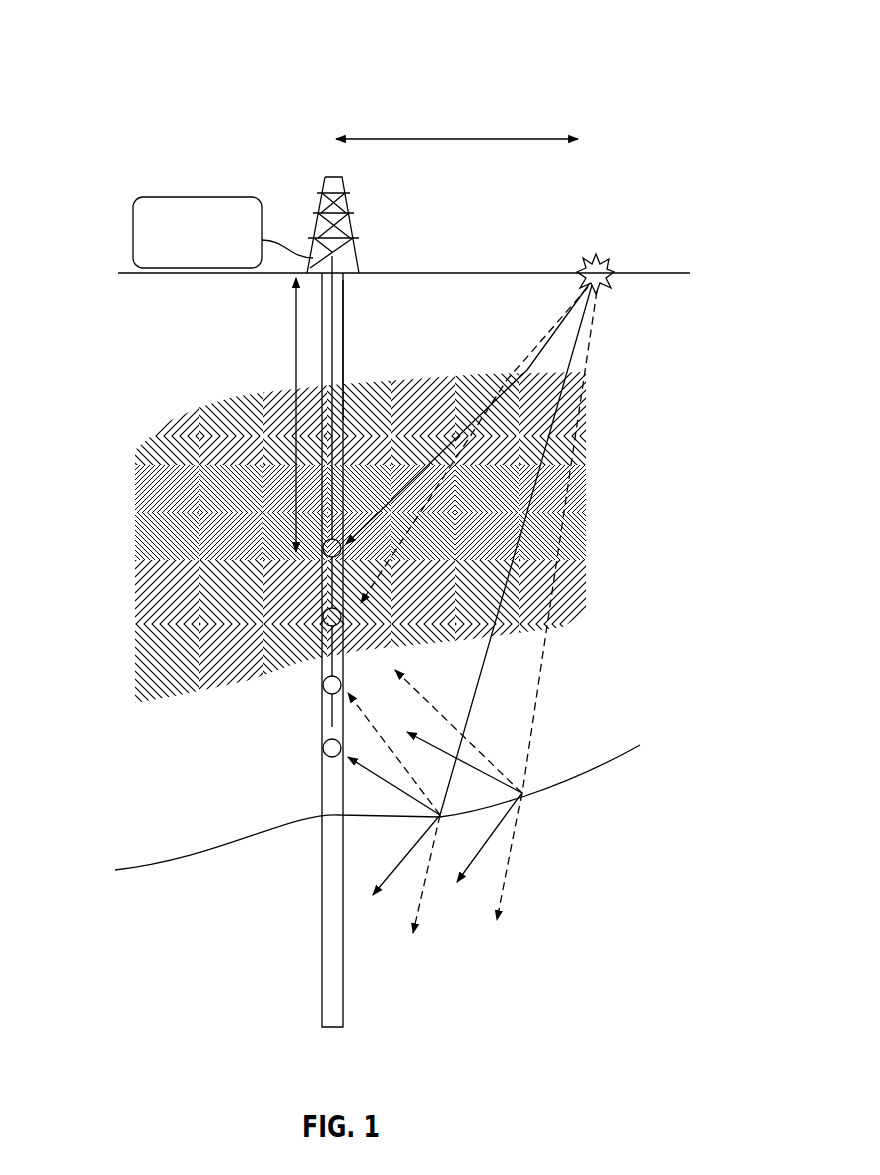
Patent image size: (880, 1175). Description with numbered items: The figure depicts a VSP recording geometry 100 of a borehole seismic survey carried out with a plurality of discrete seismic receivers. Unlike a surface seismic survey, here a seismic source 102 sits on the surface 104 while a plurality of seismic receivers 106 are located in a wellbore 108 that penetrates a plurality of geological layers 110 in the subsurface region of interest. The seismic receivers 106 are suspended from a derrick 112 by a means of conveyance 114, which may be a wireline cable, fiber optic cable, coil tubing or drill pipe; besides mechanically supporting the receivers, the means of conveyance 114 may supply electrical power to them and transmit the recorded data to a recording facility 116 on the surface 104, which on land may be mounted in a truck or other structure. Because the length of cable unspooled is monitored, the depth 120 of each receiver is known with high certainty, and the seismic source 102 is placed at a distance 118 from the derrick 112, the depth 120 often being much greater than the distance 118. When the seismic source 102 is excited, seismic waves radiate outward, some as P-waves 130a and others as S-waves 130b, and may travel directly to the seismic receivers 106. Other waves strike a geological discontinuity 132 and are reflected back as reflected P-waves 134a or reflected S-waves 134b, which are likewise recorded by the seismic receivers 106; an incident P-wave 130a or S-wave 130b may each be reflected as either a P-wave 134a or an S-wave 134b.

The VSP recording geometry 100 is at (178, 38).
The seismic source 102 is at (603, 258).
The surface 104 is at (683, 272).
The seismic receivers 106 is at (323, 748).
The wellbore 108 is at (322, 996).
The geological layers 110 is at (147, 437).
The derrick 112 is at (316, 201).
The means of conveyance 114 is at (341, 300).
The recording facility 116 is at (219, 247).
The distance 118 is at (458, 137).
The depth 120 is at (295, 350).
The P-waves 130a is at (578, 318).
The S-waves 130b is at (550, 334).
The geological discontinuity 132 is at (600, 768).
The reflected P-waves 134a is at (487, 763).
The reflected S-waves 134b is at (443, 720).